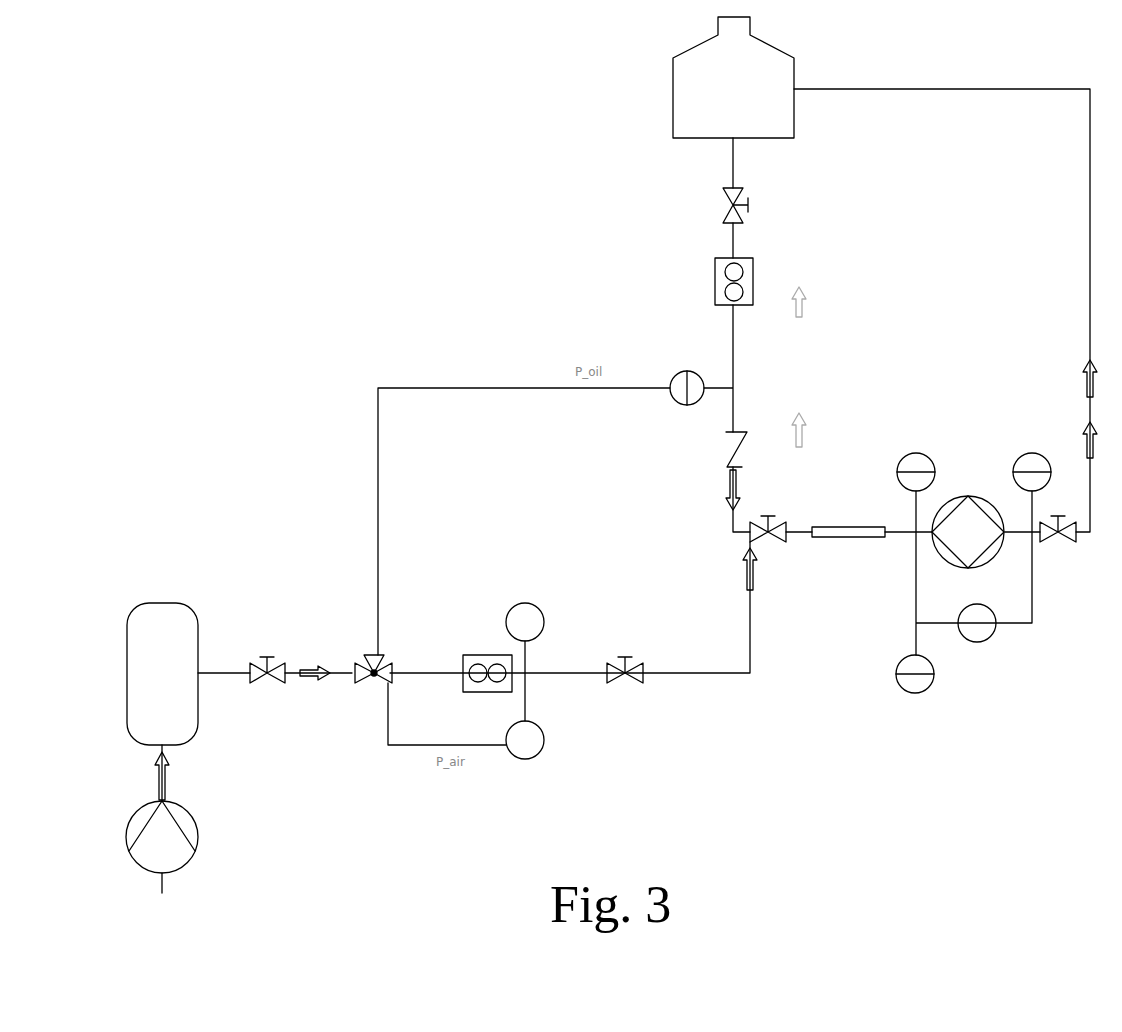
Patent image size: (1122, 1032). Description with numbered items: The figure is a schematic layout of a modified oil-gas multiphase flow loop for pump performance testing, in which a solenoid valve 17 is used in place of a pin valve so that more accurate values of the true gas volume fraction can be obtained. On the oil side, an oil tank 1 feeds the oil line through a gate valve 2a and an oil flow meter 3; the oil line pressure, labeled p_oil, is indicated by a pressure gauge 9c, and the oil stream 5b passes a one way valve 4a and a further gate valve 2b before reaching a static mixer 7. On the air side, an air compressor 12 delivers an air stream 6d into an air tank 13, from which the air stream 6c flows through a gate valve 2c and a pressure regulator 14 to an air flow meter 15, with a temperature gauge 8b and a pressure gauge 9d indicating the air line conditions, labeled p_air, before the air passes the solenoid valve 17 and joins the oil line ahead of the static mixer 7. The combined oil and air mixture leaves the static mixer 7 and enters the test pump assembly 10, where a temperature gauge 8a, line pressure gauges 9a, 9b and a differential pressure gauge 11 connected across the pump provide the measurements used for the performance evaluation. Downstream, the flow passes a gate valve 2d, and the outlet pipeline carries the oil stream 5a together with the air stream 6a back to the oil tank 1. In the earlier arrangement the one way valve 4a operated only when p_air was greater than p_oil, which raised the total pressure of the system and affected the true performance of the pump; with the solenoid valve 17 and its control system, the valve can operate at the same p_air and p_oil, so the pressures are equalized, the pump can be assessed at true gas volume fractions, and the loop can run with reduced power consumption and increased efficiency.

The oil tank 1 is at (733, 77).
The gate valve 2a is at (715, 205).
The gate valve 2b is at (765, 553).
The gate valve 2c is at (267, 691).
The gate valve 2d is at (1058, 551).
The oil flow meter 3 is at (745, 281).
The one way valve 4a is at (718, 449).
The oil stream 5a is at (1073, 382).
The oil stream 5b is at (716, 490).
The air stream 6a is at (1073, 438).
The air stream 6c is at (315, 658).
The air stream 6d is at (179, 776).
The static mixer 7 is at (848, 549).
The temperature gauge 8a is at (914, 452).
The temperature gauge 8b is at (521, 603).
The pressure gauge 9a is at (905, 692).
The pressure gauge 9b is at (1028, 455).
The pressure gauge 9c is at (686, 370).
The pressure gauge 9d is at (536, 757).
The test pump assembly 10 is at (968, 496).
The differential pressure gauge 11 is at (993, 633).
The air compressor 12 is at (178, 858).
The air tank 13 is at (162, 674).
The pressure regulator 14 is at (373, 690).
The air flow meter 15 is at (482, 656).
The solenoid valve 17 is at (625, 691).